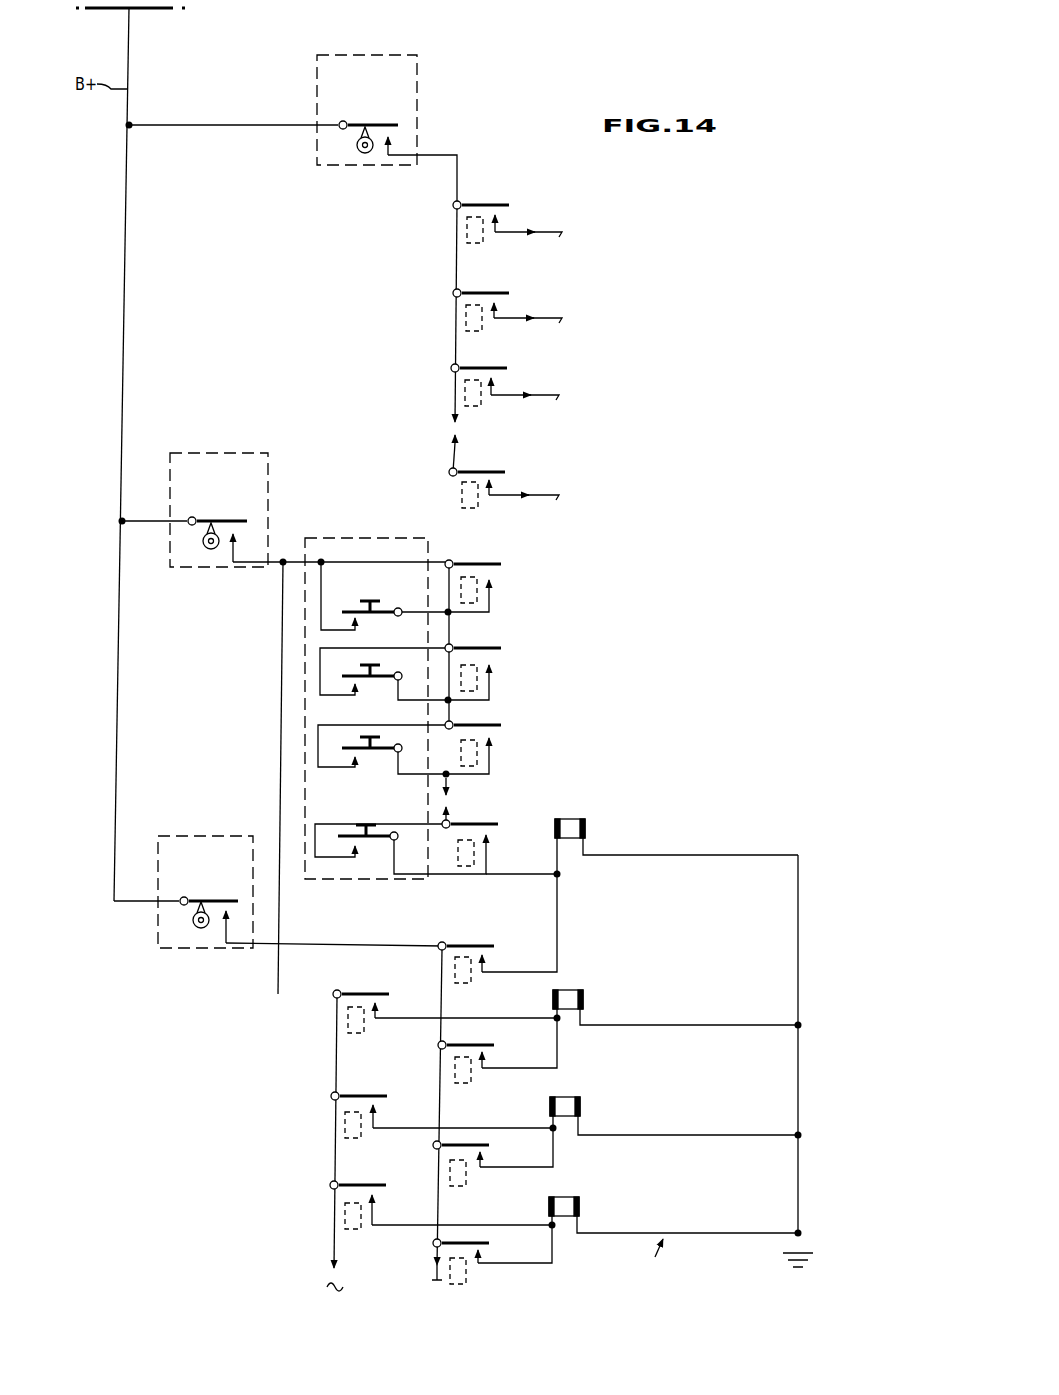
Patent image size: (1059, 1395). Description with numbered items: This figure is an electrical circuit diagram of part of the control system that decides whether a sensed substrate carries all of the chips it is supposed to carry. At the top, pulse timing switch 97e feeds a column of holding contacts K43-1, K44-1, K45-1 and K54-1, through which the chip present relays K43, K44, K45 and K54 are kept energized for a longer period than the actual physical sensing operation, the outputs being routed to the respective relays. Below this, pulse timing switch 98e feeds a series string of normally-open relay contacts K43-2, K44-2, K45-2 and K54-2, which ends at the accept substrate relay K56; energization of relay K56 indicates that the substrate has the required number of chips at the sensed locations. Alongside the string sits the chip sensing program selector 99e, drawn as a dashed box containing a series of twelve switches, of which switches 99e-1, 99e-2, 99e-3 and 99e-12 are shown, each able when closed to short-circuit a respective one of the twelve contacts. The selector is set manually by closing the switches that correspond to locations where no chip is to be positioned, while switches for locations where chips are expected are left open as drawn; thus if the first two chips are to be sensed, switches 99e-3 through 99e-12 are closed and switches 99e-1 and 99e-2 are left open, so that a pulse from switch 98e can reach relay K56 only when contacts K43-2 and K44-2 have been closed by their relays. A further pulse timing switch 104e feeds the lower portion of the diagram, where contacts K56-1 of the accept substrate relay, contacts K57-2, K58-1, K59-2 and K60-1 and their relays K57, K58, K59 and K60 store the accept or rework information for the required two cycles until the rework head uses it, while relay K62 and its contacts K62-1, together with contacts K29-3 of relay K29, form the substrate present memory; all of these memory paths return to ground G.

The pulse timing switch 97e is at (417, 90).
The pulse timing switch 98e is at (268, 463).
The chip sensing program selector 99e is at (356, 540).
The selector switch 99e-1 is at (345, 610).
The selector switch 99e-2 is at (354, 672).
The selector switch 99e-3 is at (352, 744).
The selector switch 99e-12 is at (349, 831).
The pulse timing switch 104e is at (158, 928).
The relay contacts K43-1 is at (497, 204).
The relay contacts K43-2 is at (490, 563).
The chip present relay K43 is at (478, 238).
The relay contacts K44-1 is at (497, 293).
The relay contacts K44-2 is at (490, 647).
The chip present relay K44 is at (476, 326).
The relay contacts K45-1 is at (500, 366).
The relay contacts K45-2 is at (490, 724).
The chip present relay K45 is at (476, 402).
The relay contacts K54-1 is at (490, 470).
The relay contacts K54-2 is at (480, 822).
The chip present relay K54 is at (473, 506).
The accept substrate relay K56 is at (586, 822).
The relay contacts K56-1 is at (483, 944).
The relay contacts K57-2 is at (368, 992).
The storage relay K57 is at (352, 1035).
The storage relay K58 is at (577, 992).
The relay contacts K58-1 is at (483, 1043).
The relay contacts K59-2 is at (360, 1093).
The storage relay K59 is at (353, 1140).
The relay contacts K60-1 is at (490, 1146).
The storage relay K60 is at (458, 1188).
The relay contacts K62-1 is at (490, 1245).
The relay K62 is at (565, 1108).
The relay contacts K29-3 is at (383, 1188).
The relay K29 is at (352, 1230).
The ground G is at (800, 981).